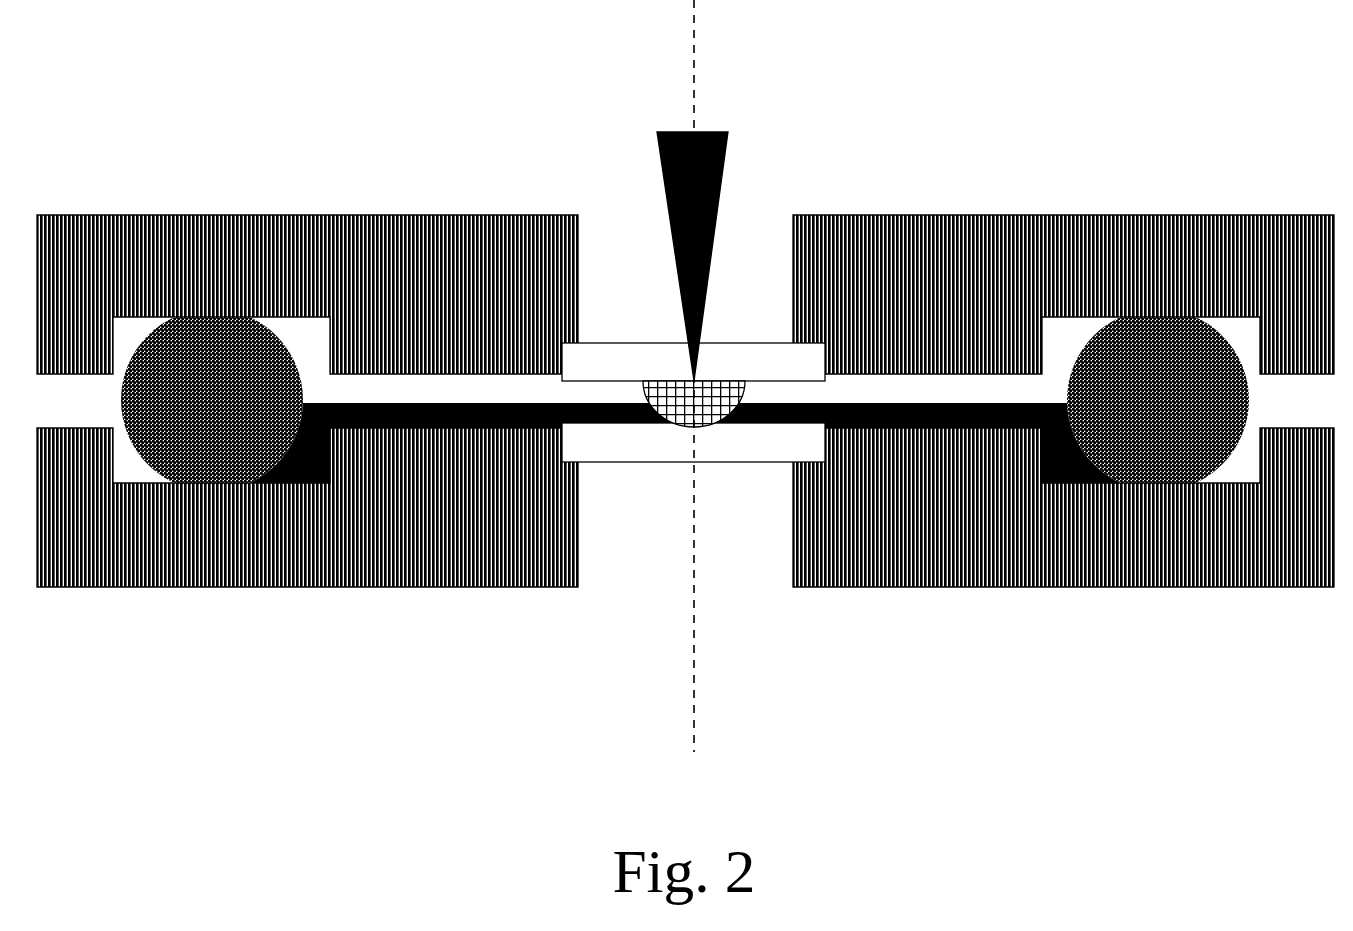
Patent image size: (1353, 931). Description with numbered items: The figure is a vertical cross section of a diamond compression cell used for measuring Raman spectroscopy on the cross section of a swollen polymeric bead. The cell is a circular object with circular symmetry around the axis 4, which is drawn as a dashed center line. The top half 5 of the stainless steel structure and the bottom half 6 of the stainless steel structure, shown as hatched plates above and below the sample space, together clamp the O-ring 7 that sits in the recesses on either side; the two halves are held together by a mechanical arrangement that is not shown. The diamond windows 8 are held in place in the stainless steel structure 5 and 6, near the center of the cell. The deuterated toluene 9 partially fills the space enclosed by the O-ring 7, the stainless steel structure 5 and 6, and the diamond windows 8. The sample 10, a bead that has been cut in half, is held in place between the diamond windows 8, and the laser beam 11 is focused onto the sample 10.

The axis 4 is at (692, 105).
The top half of the stainless steel structure 5 is at (273, 240).
The bottom half of the stainless steel structure 6 is at (235, 560).
The O-ring 7 is at (1193, 350).
The diamond windows 8 is at (598, 368).
The deuterated toluene 9 is at (1067, 460).
The sample 10 is at (712, 425).
The laser beam 11 is at (725, 148).